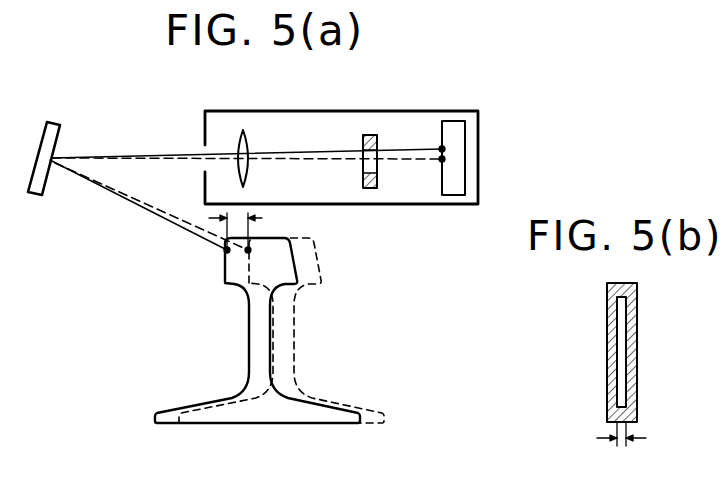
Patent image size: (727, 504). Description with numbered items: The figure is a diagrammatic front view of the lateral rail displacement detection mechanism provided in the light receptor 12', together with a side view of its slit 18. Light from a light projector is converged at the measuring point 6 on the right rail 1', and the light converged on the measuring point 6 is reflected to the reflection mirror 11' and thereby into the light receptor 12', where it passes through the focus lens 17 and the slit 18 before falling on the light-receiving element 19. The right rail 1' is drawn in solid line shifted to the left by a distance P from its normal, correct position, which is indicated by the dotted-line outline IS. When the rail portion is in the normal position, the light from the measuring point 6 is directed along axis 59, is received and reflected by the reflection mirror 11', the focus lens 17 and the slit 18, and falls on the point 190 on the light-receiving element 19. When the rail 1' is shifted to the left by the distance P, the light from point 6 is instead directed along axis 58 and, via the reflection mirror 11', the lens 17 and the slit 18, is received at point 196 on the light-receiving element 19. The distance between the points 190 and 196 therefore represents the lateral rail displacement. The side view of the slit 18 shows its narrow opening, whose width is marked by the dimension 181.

The reflection mirror 11' is at (73, 147).
The light receptor 12' is at (341, 139).
The focus lens 17 is at (236, 130).
The slit 18 is at (369, 135).
The light-receiving element 19 is at (456, 121).
The point on the light-receiving element 196 is at (442, 149).
The point on the light-receiving element 190 is at (442, 159).
The axis 58 is at (143, 212).
The axis 59 is at (137, 200).
The distance P is at (235, 229).
The measuring point 6 is at (247, 251).
The right rail 1' is at (257, 353).
The normal rail position IS is at (294, 357).
The slit width 181 is at (622, 446).